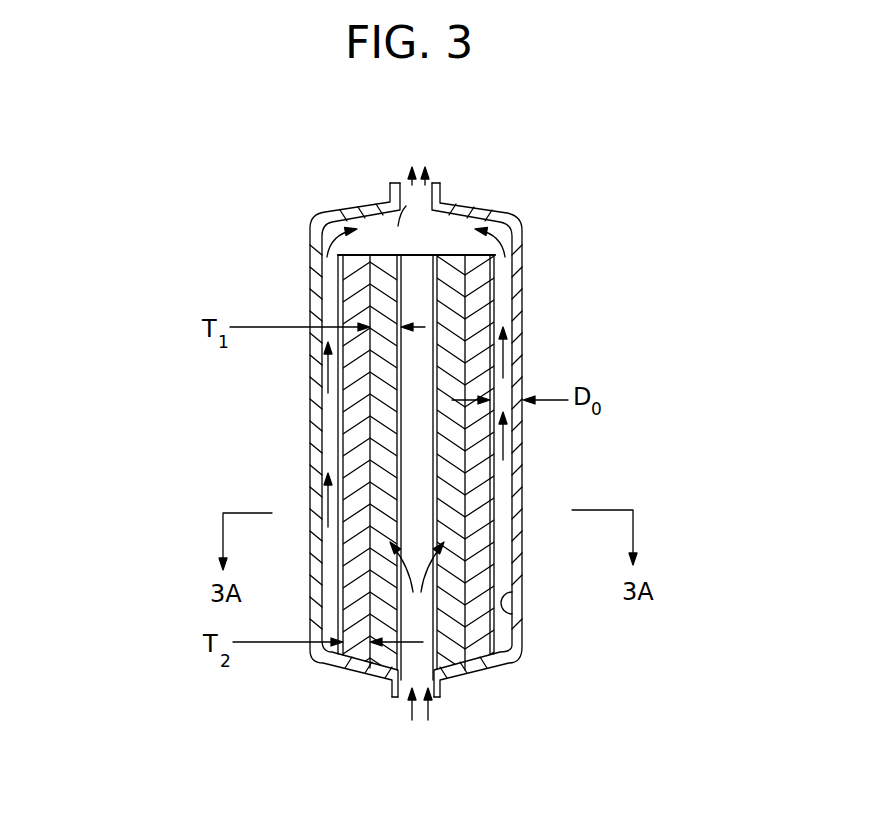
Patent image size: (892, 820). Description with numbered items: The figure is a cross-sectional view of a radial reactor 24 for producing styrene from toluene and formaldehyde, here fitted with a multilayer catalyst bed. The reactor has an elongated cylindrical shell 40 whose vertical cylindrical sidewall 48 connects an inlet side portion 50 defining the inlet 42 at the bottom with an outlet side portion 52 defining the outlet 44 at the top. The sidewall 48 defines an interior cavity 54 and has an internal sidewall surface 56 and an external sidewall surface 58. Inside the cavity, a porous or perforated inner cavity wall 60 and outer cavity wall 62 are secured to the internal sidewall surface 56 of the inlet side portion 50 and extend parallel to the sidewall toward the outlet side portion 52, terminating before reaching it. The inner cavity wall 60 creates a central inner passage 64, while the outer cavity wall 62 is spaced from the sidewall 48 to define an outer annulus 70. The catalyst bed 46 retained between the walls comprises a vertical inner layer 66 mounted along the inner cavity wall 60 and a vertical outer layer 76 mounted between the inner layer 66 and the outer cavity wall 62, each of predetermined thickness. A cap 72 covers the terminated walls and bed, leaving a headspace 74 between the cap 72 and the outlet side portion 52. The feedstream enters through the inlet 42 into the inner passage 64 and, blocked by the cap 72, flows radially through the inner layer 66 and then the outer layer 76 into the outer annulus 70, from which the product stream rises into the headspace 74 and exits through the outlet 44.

The radial reactor 24 is at (245, 280).
The elongated cylindrical shell 40 is at (525, 575).
The inlet 42 is at (447, 690).
The outlet 44 is at (443, 193).
The catalyst bed 46 is at (377, 280).
The vertical cylindrical sidewall 48 is at (525, 495).
The inlet side portion 50 is at (488, 672).
The outlet side portion 52 is at (480, 205).
The interior cavity 54 is at (520, 230).
The internal sidewall surface 56 is at (517, 613).
The external sidewall surface 58 is at (522, 633).
The inner cavity wall 60 is at (397, 365).
The outer cavity wall 62 is at (341, 446).
The inner passage 64 is at (431, 394).
The vertical inner layer 66 is at (463, 433).
The outer annulus 70 is at (505, 468).
The cap 72 is at (370, 257).
The headspace 74 is at (398, 226).
The vertical outer layer 76 is at (478, 360).